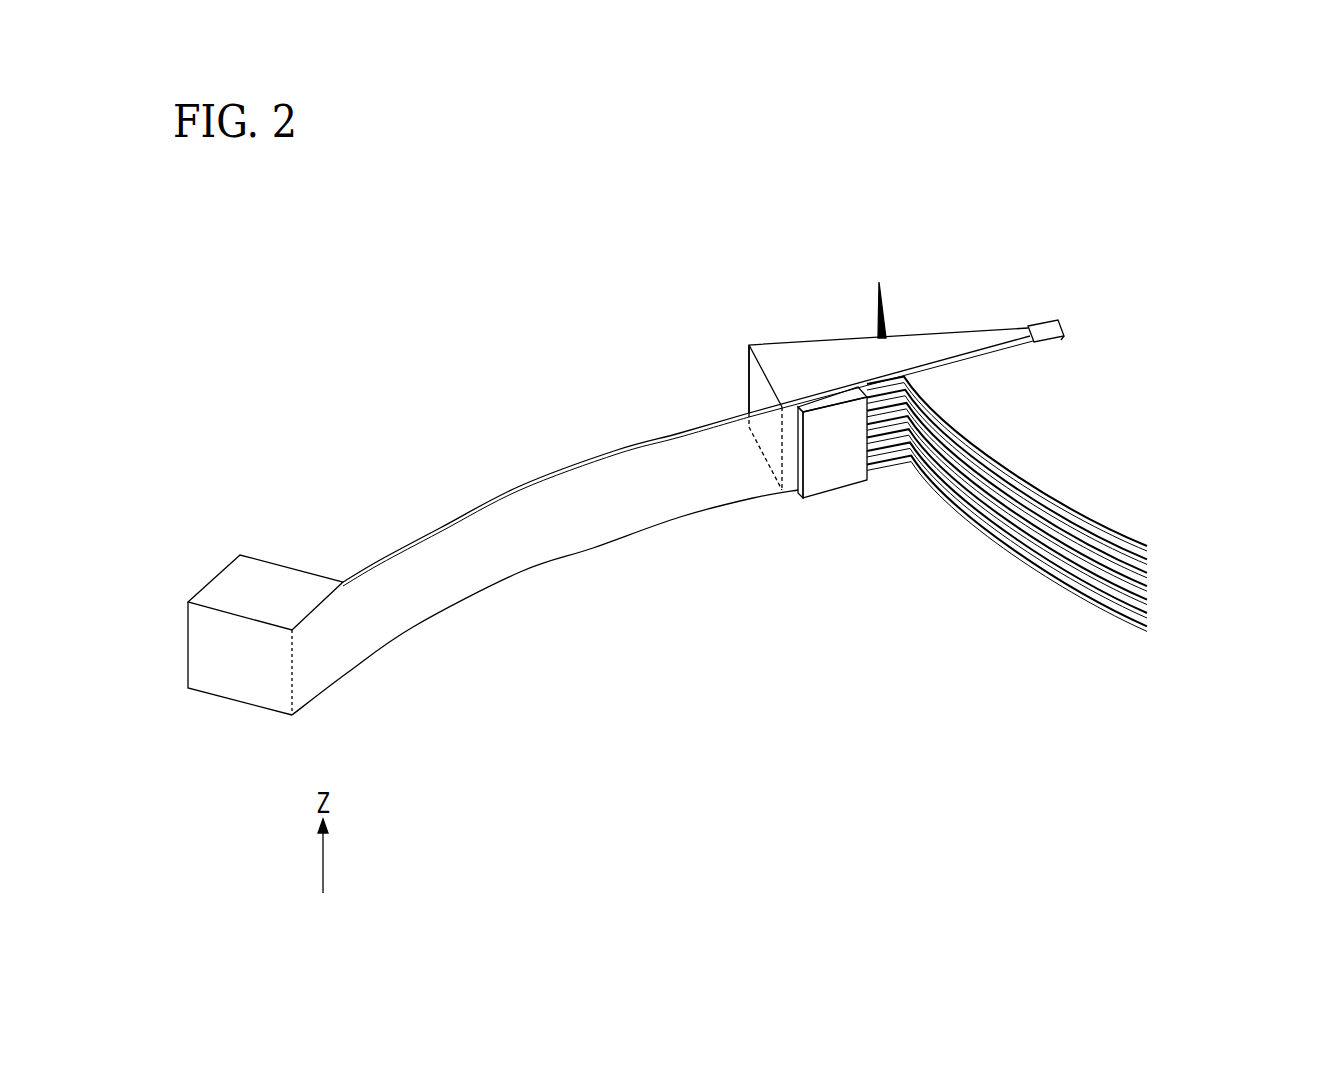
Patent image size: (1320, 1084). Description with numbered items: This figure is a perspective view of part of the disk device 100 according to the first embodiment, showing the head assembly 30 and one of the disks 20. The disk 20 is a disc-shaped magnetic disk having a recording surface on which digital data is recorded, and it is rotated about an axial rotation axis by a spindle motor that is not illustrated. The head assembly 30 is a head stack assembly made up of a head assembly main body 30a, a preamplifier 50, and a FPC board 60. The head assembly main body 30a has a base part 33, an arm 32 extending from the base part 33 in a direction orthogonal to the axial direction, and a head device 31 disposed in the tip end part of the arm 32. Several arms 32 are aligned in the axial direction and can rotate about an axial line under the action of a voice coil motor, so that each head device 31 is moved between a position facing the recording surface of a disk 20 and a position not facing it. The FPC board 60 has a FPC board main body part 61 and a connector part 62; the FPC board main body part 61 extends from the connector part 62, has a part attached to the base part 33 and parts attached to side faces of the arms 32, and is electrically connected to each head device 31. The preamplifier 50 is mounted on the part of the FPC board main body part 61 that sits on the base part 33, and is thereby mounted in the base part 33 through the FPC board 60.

The optical module 100 is at (1116, 174).
The disk 20 is at (1078, 453).
The head assembly 30 is at (913, 384).
The head assembly main body 30a is at (767, 335).
The head device 31 is at (1044, 330).
The arm 32 is at (945, 341).
The base part 33 is at (780, 374).
The preamplifier 50 is at (826, 472).
The FPC board 60 is at (616, 442).
The FPC board main body part 61 is at (585, 536).
The connector part 62 is at (245, 683).